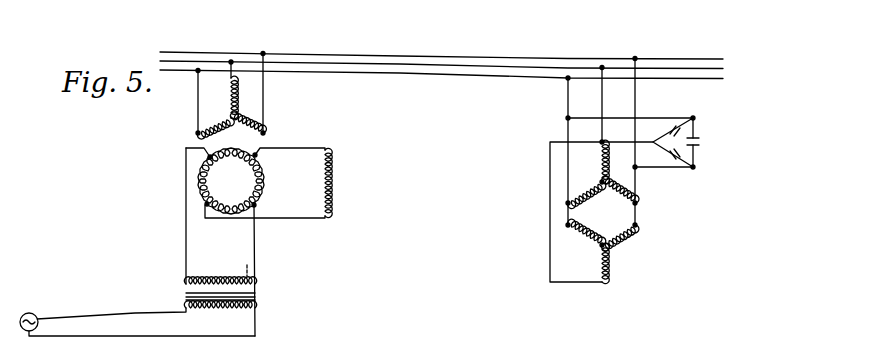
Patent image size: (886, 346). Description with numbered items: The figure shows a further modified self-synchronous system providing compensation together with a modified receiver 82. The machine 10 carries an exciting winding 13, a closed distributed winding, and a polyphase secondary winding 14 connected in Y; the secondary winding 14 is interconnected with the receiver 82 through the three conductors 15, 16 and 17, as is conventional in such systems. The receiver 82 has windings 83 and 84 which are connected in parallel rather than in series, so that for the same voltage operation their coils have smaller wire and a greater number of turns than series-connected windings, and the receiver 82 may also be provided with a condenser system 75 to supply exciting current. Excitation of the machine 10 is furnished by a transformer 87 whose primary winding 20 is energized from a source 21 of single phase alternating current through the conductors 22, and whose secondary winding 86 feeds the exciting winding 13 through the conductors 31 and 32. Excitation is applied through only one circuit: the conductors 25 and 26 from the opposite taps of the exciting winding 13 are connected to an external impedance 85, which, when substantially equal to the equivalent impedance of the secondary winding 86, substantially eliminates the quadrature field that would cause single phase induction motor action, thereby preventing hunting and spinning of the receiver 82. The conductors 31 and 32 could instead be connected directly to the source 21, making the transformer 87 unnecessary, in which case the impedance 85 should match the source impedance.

The motor 10 is at (186, 140).
The exciting winding 13 is at (247, 154).
The polyphase secondary winding 14 is at (243, 100).
The conductor 15 is at (400, 73).
The conductor 16 is at (440, 64).
The conductor 17 is at (476, 56).
The primary winding 20 is at (238, 313).
The source 21 is at (39, 322).
The conductors 22 is at (135, 314).
The conductor 25 is at (233, 220).
The conductor 26 is at (309, 148).
The conductor 31 is at (256, 251).
The conductor 32 is at (186, 178).
The condenser system 75 is at (699, 135).
The receiver 82 is at (640, 216).
The winding 83 is at (598, 173).
The winding 84 is at (607, 259).
The external impedance 85 is at (332, 180).
The transformer secondary winding 86 is at (228, 281).
The transformer 87 is at (258, 297).